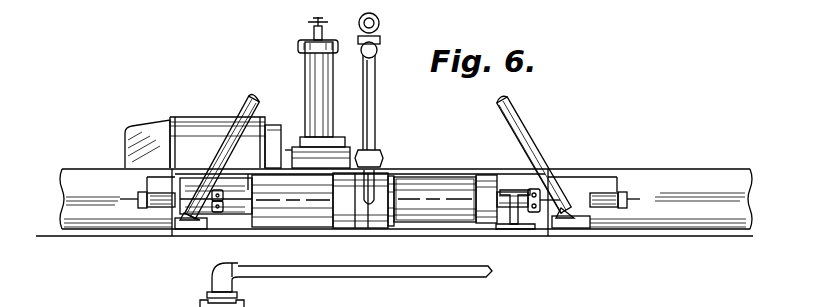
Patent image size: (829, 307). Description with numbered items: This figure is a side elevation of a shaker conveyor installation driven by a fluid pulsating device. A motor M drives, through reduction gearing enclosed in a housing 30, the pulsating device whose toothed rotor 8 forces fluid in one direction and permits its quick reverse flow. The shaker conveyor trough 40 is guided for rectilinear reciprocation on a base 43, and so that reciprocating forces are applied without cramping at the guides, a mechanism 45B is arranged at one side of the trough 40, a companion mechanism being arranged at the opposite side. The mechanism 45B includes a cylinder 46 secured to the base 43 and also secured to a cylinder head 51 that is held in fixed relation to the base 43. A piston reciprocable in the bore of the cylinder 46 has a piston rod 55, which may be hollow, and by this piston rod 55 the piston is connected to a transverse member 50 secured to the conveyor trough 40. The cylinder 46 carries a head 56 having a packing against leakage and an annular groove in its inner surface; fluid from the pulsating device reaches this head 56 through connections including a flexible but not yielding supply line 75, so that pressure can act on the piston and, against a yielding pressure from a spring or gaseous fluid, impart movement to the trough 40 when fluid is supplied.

The motor M is at (183, 117).
The shaker conveyor trough 40 is at (90, 166).
The rotor 8 is at (125, 188).
The housing 30 is at (279, 168).
The mechanism 45B is at (429, 186).
The cylinder head 51 is at (484, 178).
The transverse member 50 is at (240, 186).
The piston rod 55 is at (308, 206).
The head 56 is at (370, 224).
The cylinder 46 is at (432, 208).
The base 43 is at (504, 229).
The supply line 75 is at (416, 272).